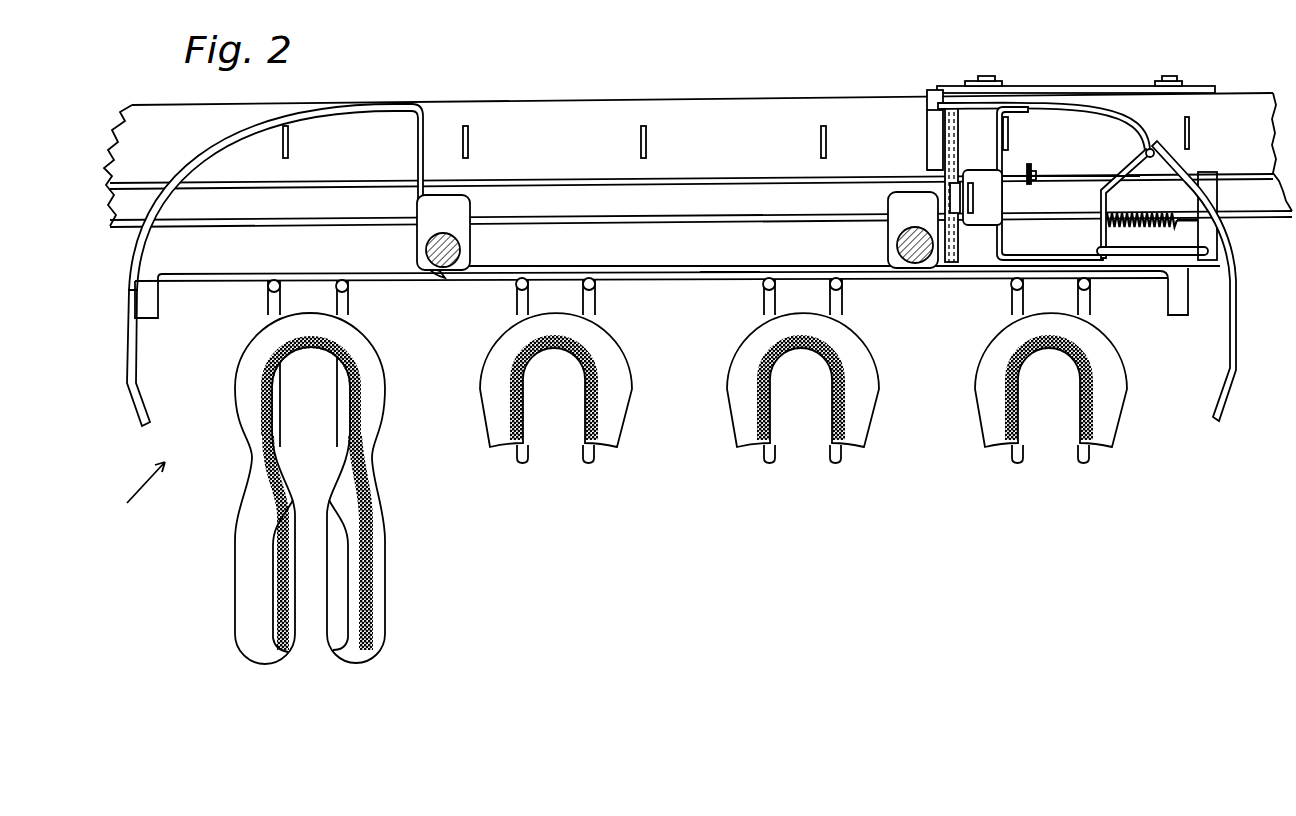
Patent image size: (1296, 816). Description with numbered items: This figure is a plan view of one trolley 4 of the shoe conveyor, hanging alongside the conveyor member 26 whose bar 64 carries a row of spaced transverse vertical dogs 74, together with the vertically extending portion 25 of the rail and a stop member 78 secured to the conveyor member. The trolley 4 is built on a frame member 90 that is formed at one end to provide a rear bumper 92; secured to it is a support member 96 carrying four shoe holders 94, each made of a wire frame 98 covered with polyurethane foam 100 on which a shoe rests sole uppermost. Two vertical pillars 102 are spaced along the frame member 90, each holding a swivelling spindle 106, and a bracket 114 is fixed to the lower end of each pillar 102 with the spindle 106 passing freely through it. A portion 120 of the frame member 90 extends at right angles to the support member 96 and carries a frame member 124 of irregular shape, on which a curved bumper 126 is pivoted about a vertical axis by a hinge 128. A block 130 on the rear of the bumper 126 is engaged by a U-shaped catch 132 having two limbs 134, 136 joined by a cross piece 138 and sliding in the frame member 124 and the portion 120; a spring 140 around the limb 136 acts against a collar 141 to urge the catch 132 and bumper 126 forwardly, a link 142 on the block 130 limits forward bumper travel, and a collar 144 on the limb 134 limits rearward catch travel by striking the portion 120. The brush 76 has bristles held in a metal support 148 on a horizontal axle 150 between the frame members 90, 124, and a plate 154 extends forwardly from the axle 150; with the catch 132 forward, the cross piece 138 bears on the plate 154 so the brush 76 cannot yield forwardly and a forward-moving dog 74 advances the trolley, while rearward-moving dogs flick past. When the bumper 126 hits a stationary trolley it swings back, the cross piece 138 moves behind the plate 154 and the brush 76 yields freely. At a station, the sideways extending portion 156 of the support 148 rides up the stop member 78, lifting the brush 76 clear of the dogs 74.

The trolley 4 is at (137, 494).
The vertically extending portion of the rail 25 is at (609, 215).
The conveyor member 26 is at (572, 152).
The bar 64 is at (746, 152).
The dog 74 is at (288, 141).
The brush 76 is at (935, 163).
The stop member 78 is at (1133, 85).
The frame member 90 is at (665, 270).
The rear bumper 92 is at (129, 262).
The shoe holder 94 is at (878, 388).
The support member 96 is at (726, 272).
The wire frame 98 is at (348, 300).
The polyurethane foam 100 is at (250, 506).
The vertical pillar 102 is at (466, 262).
The spindle 106 is at (459, 252).
The bracket 114 is at (465, 226).
The portion of the frame member 120 is at (1035, 208).
The frame member of irregular shape 124 is at (1118, 111).
The curved bumper 126 is at (1228, 350).
The hinge 128 is at (1156, 153).
The block 130 is at (1217, 238).
The catch 132 is at (1093, 222).
The limb 134 is at (1013, 172).
The limb 136 is at (1035, 228).
The cross piece 138 is at (973, 195).
The spring 140 is at (1143, 213).
The collar 141 is at (1158, 226).
The link 142 is at (1138, 255).
The collar 144 is at (1036, 166).
The metal support 148 is at (937, 112).
The horizontal axle 150 is at (961, 128).
The plate 154 is at (955, 210).
The sideways extending portion 156 is at (927, 95).